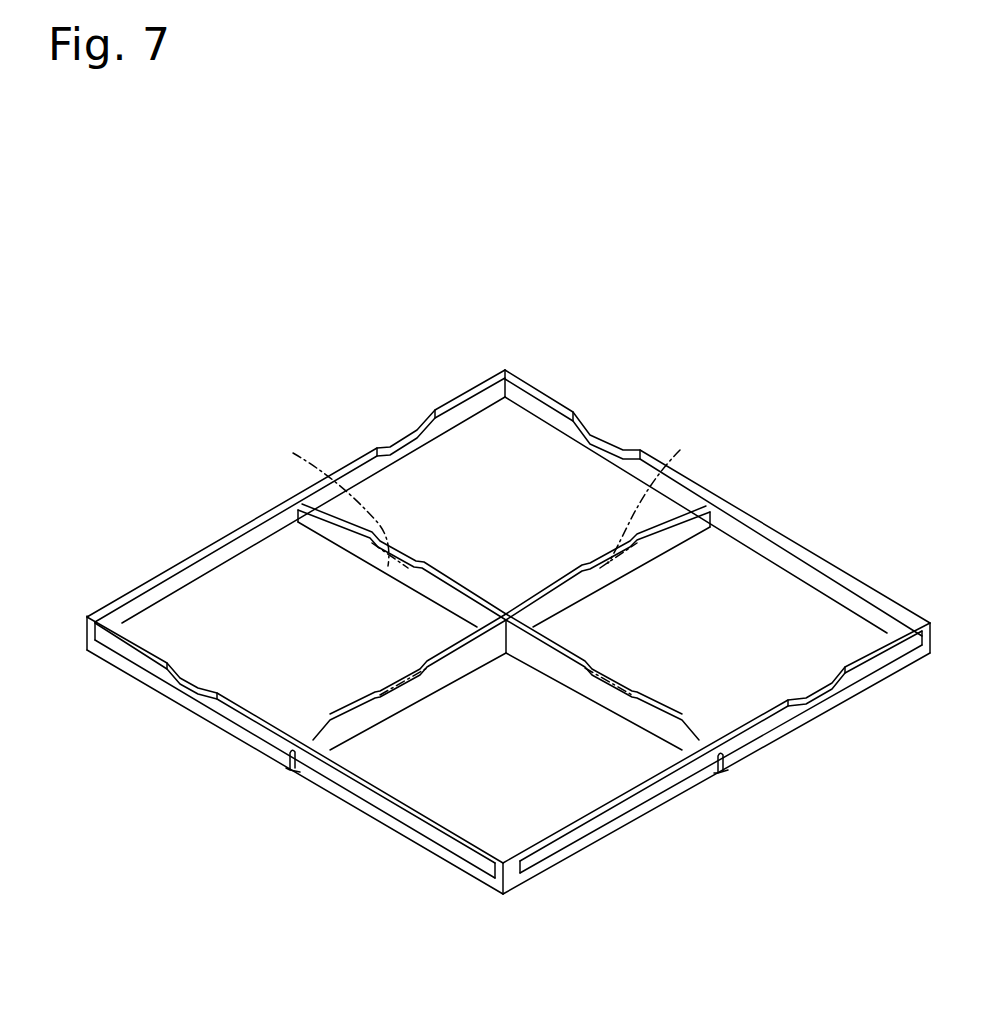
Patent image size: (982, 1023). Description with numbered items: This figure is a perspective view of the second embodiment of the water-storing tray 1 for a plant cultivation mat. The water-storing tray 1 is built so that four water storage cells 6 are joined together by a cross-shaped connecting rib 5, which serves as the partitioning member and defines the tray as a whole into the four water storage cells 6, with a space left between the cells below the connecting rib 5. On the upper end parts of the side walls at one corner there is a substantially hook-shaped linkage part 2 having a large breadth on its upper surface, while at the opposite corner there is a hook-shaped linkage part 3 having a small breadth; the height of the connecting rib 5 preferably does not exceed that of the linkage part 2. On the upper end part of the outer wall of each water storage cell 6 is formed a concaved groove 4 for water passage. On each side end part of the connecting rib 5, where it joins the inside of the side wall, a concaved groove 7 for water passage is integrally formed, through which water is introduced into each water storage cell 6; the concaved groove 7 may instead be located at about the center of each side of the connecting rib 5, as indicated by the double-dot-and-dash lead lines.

The water-storing tray 1 is at (535, 378).
The linkage part of large breadth 2 is at (780, 537).
The linkage part of small breadth 3 is at (133, 590).
The concaved groove for water passage 4 is at (607, 440).
The connecting rib 5 is at (358, 712).
The water storage cell 6 is at (500, 418).
The concaved groove for water passage 7 is at (298, 495).